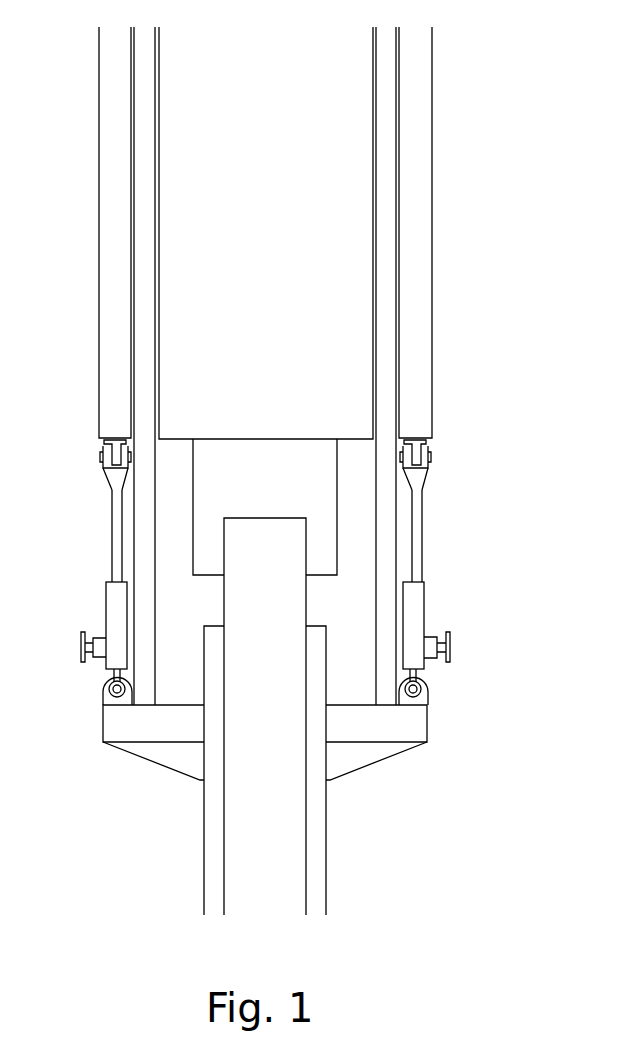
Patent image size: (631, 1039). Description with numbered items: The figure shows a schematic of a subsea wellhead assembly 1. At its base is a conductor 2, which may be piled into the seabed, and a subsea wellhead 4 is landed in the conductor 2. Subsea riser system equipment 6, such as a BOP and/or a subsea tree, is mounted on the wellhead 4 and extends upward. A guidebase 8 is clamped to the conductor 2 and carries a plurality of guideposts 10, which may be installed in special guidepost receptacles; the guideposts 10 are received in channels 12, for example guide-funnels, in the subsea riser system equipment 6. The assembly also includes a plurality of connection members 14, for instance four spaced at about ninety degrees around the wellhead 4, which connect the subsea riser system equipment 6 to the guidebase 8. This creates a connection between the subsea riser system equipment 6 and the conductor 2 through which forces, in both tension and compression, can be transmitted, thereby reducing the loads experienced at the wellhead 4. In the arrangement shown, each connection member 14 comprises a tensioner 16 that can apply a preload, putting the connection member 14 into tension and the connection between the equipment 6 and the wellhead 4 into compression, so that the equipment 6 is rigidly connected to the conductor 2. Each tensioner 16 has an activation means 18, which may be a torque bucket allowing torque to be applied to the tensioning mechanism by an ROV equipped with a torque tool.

The subsea wellhead assembly 1 is at (541, 359).
The conductor 2 is at (326, 848).
The subsea wellhead 4 is at (307, 556).
The subsea riser system equipment 6 is at (432, 182).
The guidebase 8 is at (420, 725).
The guideposts 10 is at (140, 281).
The channels 12 is at (130, 106).
The connection members 14 is at (113, 530).
The tensioner 16 is at (417, 621).
The activation means 18 is at (81, 655).